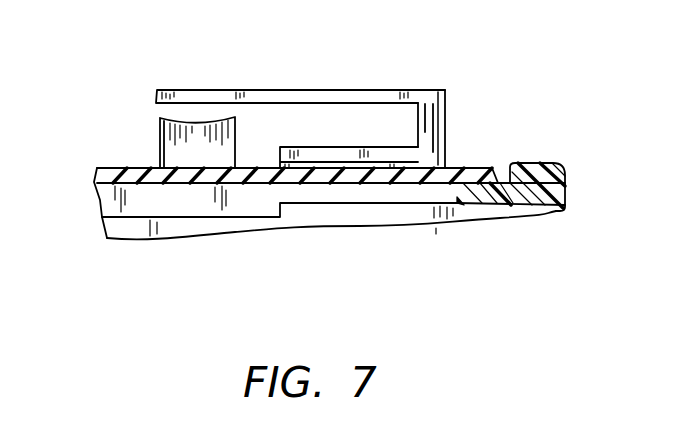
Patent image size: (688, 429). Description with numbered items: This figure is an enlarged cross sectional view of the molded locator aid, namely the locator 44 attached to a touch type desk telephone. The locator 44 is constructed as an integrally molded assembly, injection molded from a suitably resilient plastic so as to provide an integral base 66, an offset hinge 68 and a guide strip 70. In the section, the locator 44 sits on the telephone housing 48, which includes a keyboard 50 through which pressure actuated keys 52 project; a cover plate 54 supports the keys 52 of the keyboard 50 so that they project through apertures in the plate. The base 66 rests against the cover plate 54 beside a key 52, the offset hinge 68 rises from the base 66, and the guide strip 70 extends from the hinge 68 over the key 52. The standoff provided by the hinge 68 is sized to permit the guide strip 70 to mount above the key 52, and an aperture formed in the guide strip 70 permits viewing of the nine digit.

The locator 44 is at (440, 92).
The housing 48 is at (550, 162).
The keyboard 50 is at (100, 200).
The key 52 is at (160, 118).
The cover plate 54 is at (99, 166).
The base 66 is at (335, 148).
The offset hinge 68 is at (445, 127).
The guide strip 70 is at (303, 91).